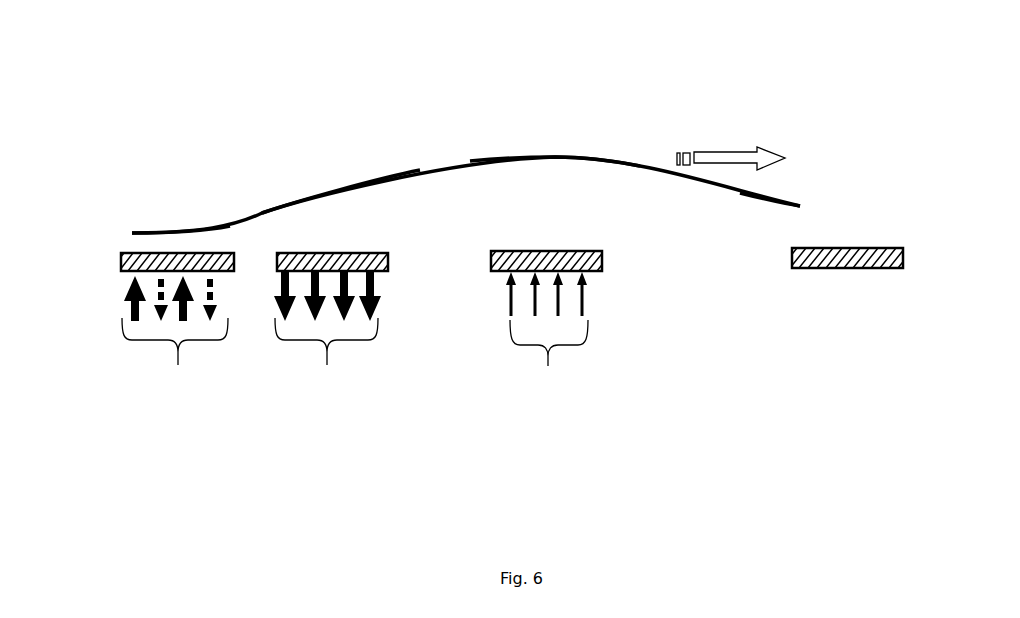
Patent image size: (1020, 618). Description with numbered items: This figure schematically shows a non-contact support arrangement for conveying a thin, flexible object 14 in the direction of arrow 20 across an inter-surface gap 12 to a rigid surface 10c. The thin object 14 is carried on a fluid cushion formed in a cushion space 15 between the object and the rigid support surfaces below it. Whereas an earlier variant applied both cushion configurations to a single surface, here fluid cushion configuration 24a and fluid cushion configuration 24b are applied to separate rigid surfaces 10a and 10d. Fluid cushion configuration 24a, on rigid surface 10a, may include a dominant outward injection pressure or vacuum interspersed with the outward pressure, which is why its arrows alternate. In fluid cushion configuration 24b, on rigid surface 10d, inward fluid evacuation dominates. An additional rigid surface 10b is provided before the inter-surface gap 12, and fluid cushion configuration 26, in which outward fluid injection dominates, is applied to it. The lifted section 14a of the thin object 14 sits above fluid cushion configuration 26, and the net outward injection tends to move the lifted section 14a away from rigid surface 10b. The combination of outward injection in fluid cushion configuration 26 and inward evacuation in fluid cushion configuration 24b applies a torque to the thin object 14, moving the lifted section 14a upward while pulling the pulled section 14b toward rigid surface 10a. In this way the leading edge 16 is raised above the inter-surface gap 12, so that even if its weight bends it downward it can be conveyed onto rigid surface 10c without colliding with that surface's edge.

The rigid surface 10a is at (121, 272).
The additional rigid surface 10b is at (490, 257).
The rigid surface 10c is at (793, 270).
The rigid surface 10d is at (331, 250).
The inter-surface gap 12 is at (718, 257).
The thin object 14 is at (264, 213).
The lifted section 14a is at (546, 158).
The pulled section 14b is at (338, 190).
The cushion space 15 is at (250, 242).
The leading edge 16 is at (803, 202).
The arrow 20 is at (727, 152).
The fluid cushion configuration 24a is at (177, 363).
The fluid cushion configuration 24b is at (327, 363).
The fluid cushion configuration 26 is at (548, 365).